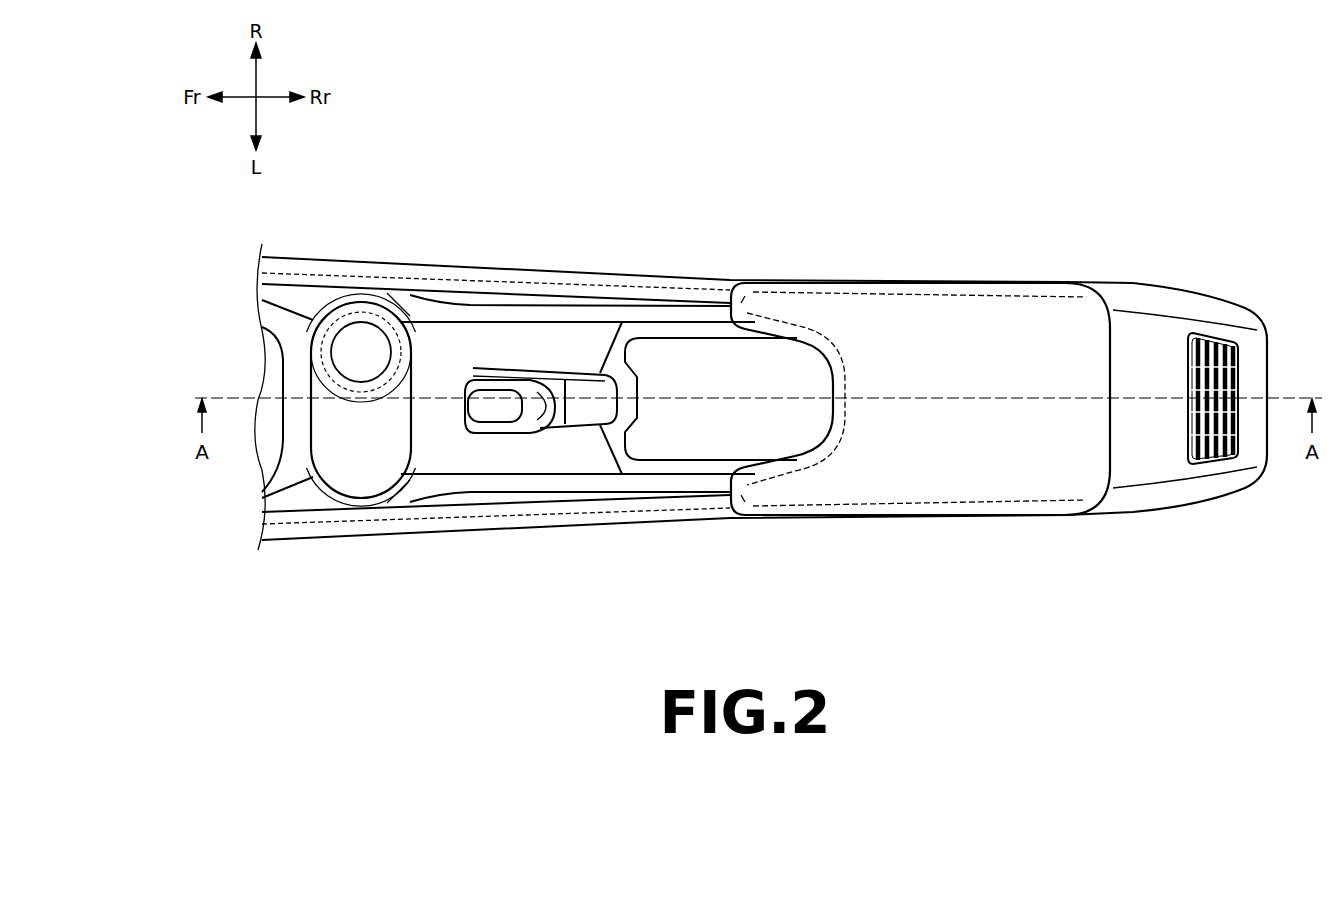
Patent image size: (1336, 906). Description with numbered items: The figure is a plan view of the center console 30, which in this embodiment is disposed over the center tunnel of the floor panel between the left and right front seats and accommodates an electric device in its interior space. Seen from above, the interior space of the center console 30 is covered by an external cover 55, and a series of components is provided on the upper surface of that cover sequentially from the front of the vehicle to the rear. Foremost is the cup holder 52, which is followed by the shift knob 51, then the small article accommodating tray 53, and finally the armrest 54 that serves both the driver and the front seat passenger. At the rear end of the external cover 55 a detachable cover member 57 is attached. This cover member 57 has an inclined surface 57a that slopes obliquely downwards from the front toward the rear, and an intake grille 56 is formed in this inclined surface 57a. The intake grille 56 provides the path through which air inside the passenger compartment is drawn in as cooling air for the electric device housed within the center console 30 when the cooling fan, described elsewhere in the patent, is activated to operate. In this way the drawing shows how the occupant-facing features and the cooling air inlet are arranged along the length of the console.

The center console 30 is at (1037, 212).
The shift knob 51 is at (540, 387).
The cup holder 52 is at (368, 337).
The small article accommodating tray 53 is at (693, 362).
The armrest 54 is at (934, 338).
The external cover 55 is at (614, 514).
The intake grille 56 is at (1220, 342).
The cover member 57 is at (1168, 498).
The inclined surface 57a is at (1138, 348).